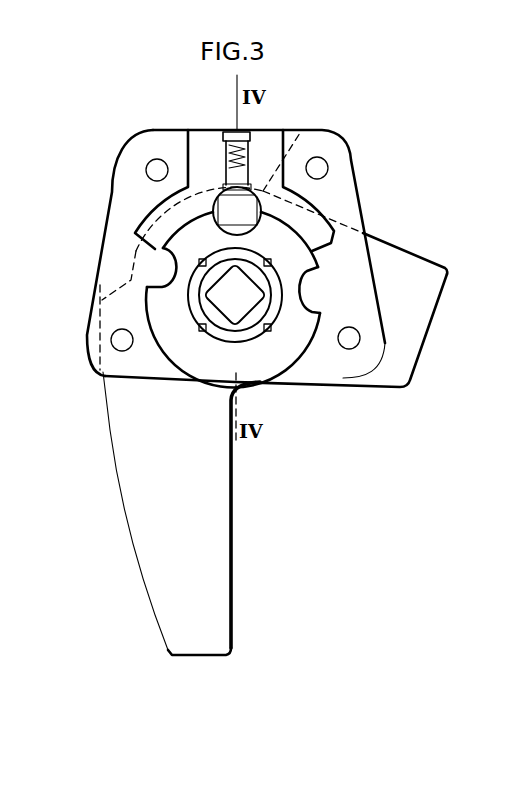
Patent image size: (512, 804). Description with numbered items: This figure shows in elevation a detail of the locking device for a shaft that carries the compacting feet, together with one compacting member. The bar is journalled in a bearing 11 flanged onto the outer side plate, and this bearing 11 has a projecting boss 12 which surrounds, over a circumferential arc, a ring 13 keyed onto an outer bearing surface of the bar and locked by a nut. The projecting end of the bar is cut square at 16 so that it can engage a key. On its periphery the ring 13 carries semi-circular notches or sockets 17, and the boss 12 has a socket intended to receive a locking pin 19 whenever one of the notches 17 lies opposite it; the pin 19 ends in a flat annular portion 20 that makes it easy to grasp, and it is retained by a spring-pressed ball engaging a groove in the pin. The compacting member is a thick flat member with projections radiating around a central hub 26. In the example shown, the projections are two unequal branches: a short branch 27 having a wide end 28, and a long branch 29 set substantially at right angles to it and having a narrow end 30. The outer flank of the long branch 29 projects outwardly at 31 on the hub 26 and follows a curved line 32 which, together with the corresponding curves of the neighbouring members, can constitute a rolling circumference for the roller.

The bearing 11 is at (343, 211).
The projecting boss 12 is at (287, 205).
The ring 13 is at (303, 266).
The square cut end 16 is at (223, 303).
The semi-circular notches 17 is at (160, 283).
The locking pin 19 is at (248, 225).
The flat annular portion 20 is at (222, 208).
The central hub 26 is at (300, 133).
The short branch 27 is at (400, 267).
The wide end 28 is at (427, 337).
The long branch 29 is at (207, 489).
The narrow end 30 is at (213, 656).
The outward projection 31 is at (100, 301).
The curved line 32 is at (112, 457).